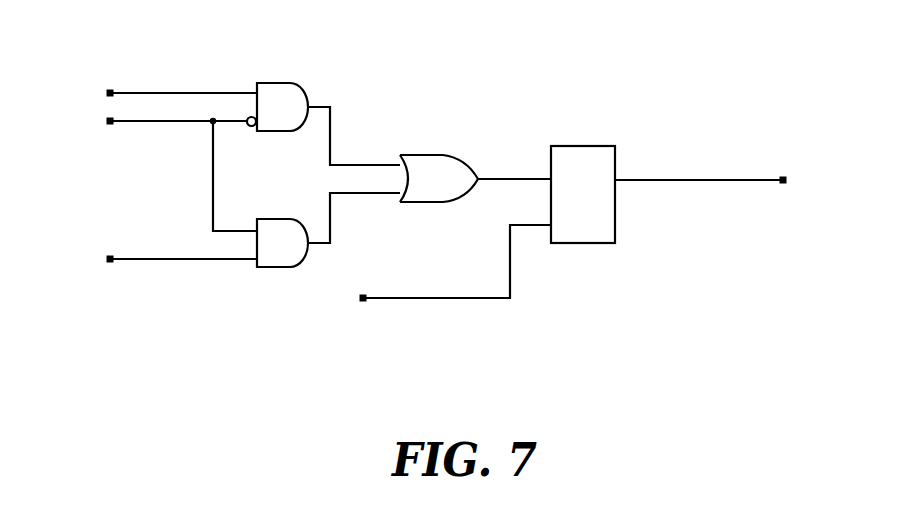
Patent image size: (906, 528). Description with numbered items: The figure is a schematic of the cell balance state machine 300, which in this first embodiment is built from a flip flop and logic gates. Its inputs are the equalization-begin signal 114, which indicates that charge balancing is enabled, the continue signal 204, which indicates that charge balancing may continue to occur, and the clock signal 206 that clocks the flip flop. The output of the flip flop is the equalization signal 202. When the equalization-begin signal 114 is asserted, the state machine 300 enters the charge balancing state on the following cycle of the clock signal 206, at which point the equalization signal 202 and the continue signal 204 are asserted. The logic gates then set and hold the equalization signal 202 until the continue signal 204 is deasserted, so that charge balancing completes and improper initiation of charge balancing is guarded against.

The EQBEG signal 114 is at (212, 93).
The EQ signal 202 is at (725, 182).
The CONT signal 204 is at (140, 260).
The clock signal 206 is at (427, 300).
The cell balance state machine 300 is at (248, 362).